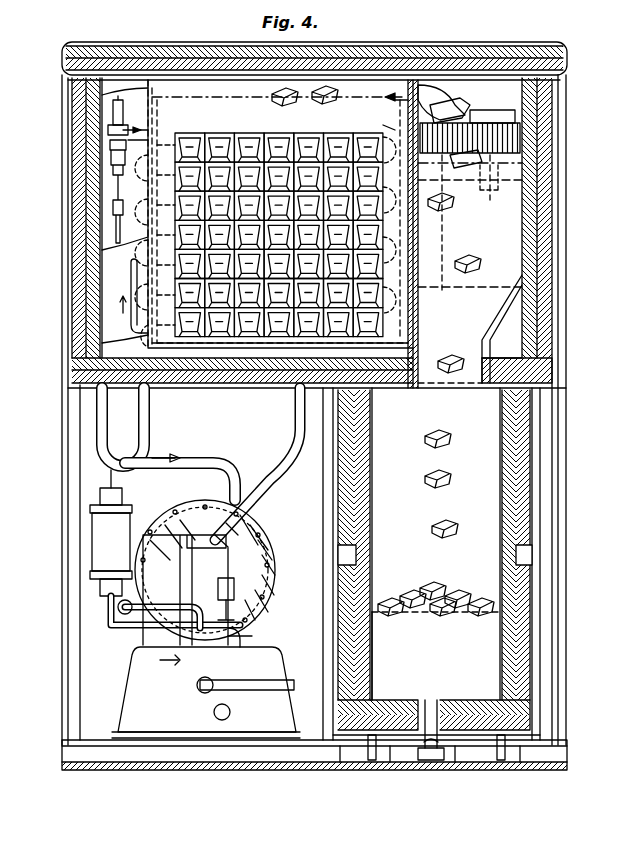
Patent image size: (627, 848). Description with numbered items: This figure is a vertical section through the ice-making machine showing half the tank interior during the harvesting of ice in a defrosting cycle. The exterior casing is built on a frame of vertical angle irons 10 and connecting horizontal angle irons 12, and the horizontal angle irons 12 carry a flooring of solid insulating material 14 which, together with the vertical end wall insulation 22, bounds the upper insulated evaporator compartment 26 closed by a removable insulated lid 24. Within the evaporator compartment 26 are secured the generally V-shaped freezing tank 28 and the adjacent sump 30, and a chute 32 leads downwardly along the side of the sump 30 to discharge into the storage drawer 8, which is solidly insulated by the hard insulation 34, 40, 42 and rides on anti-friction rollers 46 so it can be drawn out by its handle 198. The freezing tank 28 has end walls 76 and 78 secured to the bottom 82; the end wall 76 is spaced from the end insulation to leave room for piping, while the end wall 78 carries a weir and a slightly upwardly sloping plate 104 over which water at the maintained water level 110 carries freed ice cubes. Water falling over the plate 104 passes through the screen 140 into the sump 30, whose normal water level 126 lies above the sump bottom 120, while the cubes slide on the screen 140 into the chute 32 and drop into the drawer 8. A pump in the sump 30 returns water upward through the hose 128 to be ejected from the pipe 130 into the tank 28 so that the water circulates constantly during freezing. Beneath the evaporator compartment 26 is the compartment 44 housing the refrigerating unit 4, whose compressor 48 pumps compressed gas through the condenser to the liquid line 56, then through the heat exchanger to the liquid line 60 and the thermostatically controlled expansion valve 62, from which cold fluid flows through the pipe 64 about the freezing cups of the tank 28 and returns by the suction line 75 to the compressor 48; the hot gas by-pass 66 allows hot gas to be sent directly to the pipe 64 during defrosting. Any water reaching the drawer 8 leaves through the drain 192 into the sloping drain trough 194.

The refrigerating unit 4 is at (150, 583).
The storage drawer 8 is at (495, 650).
The vertical angle irons 10 is at (545, 447).
The horizontal angle irons 12 is at (72, 413).
The flooring of solid insulating material 14 is at (95, 370).
The end wall insulating material 22 is at (540, 207).
The removable insulated lid 24 is at (492, 46).
The evaporator compartment 26 is at (108, 296).
The freezing tank 28 is at (100, 252).
The sump 30 is at (498, 232).
The chute 32 is at (495, 310).
The hard insulation 34 is at (472, 710).
The hard insulation 40 is at (520, 613).
The hard insulation 42 is at (372, 660).
The compartment 44 is at (112, 661).
The anti-friction rollers 46 is at (370, 760).
The compressor 48 is at (258, 540).
The liquid line 56 is at (150, 430).
The liquid line 60 is at (116, 180).
The thermostatically controlled expansion valve 62 is at (108, 130).
The pipe 64 is at (173, 138).
The hot gas by-pass 66 is at (292, 441).
The suction line 75 is at (207, 462).
The end wall 76 is at (100, 104).
The end wall 78 is at (402, 160).
The bottom 82 is at (110, 345).
The plate 104 is at (448, 120).
The water level 110 is at (185, 95).
The bottom of the sump 120 is at (520, 268).
The normal water level 126 is at (520, 163).
The hose 128 is at (520, 180).
The pipe 130 is at (398, 100).
The screen 140 is at (505, 135).
The drain 192 is at (428, 708).
The sloping drain trough 194 is at (428, 762).
The handle 198 is at (425, 95).